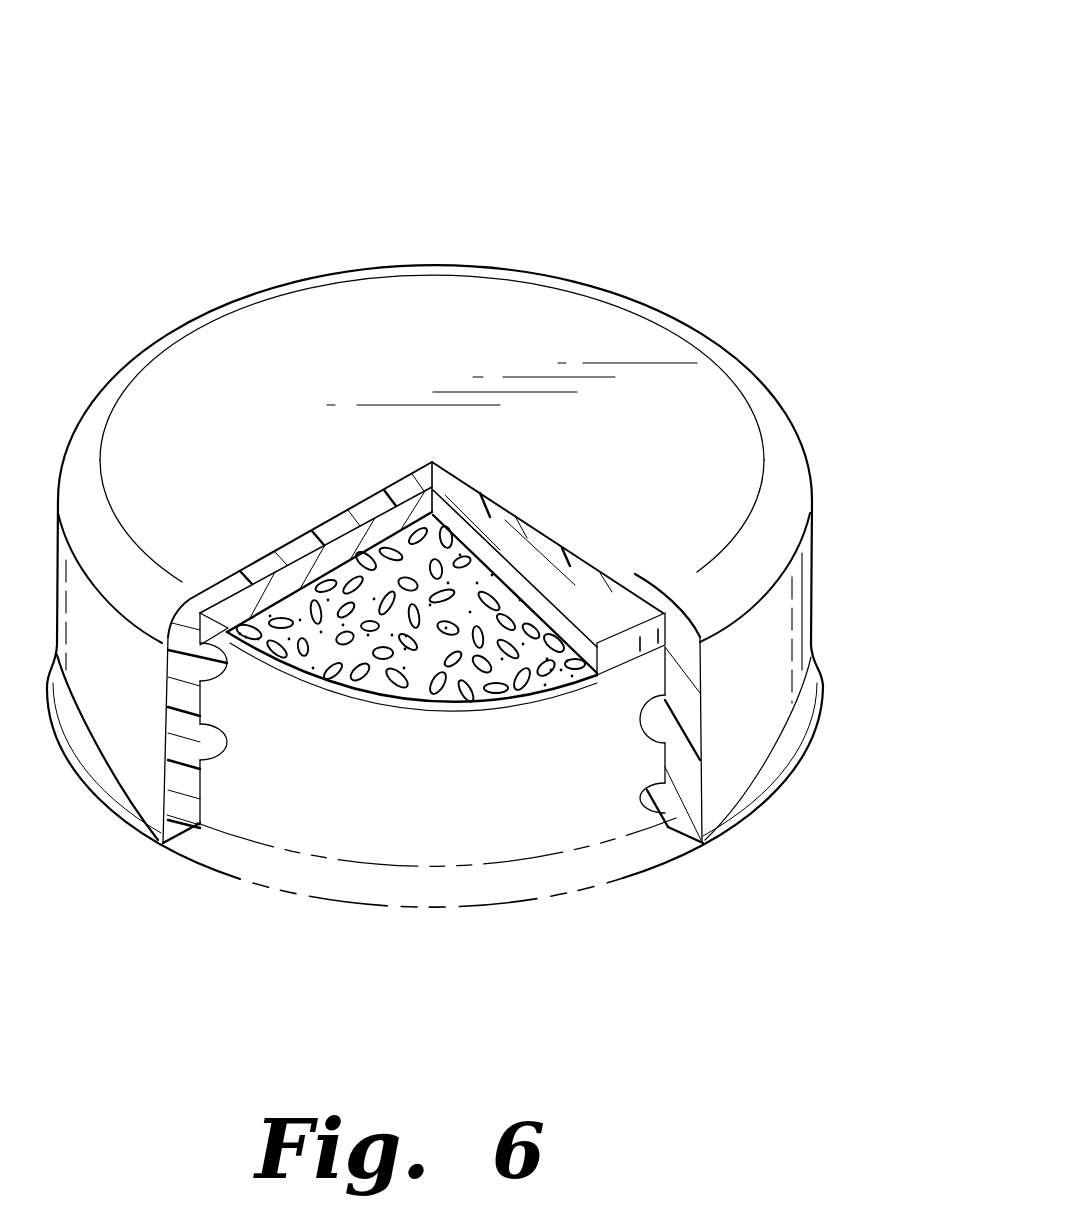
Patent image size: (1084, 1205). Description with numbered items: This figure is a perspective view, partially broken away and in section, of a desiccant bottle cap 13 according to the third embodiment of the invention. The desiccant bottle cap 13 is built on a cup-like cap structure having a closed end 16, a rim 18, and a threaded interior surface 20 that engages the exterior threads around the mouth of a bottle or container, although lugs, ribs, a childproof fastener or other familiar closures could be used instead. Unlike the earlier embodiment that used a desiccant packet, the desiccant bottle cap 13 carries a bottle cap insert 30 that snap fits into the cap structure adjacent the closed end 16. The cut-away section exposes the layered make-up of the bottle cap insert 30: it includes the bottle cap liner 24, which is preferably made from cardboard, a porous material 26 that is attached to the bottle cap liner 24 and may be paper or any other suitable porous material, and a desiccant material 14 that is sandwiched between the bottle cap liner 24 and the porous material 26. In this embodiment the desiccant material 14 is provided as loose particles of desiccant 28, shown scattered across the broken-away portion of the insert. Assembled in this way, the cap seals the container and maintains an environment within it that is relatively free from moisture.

The desiccant bottle cap 13 is at (668, 145).
The desiccant material 14 is at (345, 572).
The closed end 16 is at (437, 356).
The rim 18 is at (810, 577).
The threaded interior surface 20 is at (648, 803).
The bottle cap liner 24 is at (393, 522).
The porous material 26 is at (307, 683).
The loose particles of desiccant 28 is at (390, 585).
The bottle cap insert 30 is at (578, 712).